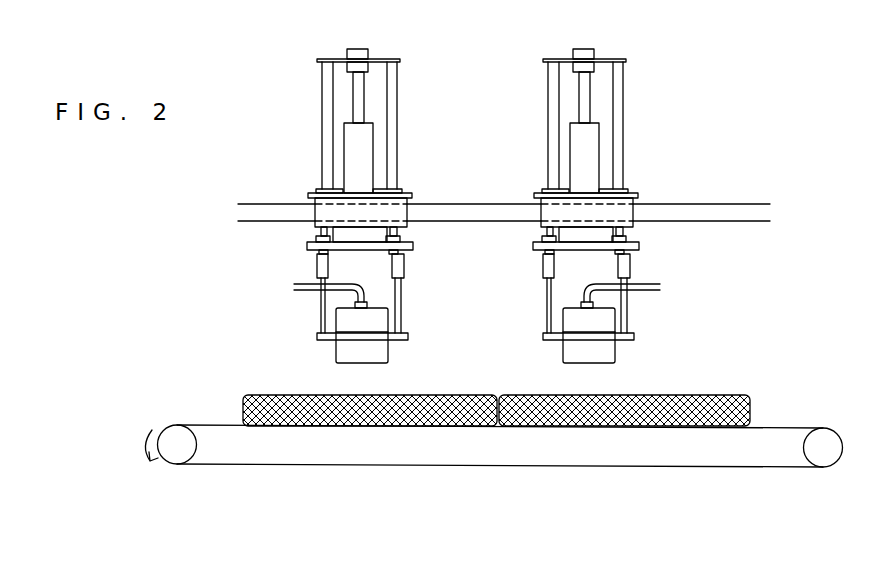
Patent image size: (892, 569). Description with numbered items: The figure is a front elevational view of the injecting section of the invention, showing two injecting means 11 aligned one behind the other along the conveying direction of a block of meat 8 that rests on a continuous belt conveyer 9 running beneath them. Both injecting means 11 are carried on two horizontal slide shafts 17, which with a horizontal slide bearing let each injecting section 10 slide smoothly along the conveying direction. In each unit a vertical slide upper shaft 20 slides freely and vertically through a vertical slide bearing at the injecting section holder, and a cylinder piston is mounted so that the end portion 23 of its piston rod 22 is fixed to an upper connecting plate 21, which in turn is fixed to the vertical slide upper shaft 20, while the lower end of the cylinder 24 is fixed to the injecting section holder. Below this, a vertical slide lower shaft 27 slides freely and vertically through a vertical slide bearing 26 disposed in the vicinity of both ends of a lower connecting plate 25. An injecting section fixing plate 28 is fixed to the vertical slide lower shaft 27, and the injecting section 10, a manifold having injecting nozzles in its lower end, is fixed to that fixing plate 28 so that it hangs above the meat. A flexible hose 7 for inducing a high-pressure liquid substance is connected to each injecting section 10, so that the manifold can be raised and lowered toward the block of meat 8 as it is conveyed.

The flexible hose 7 is at (352, 280).
The block of meat 8 is at (750, 400).
The continuous belt conveyer 9 is at (720, 467).
The injecting section (manifold) 10 is at (622, 353).
The injecting means 11 is at (367, 182).
The horizontal slide shaft 17 is at (730, 204).
The vertical slide upper shaft 20 is at (623, 124).
The upper connecting plate 21 is at (628, 61).
The piston rod 22 is at (580, 103).
The end portion 23 is at (587, 49).
The cylinder 24 is at (600, 157).
The lower connecting plate 25 is at (575, 255).
The vertical slide bearing 26 is at (635, 262).
The vertical slide lower shaft 27 is at (635, 314).
The injecting section fixing plate 28 is at (550, 343).